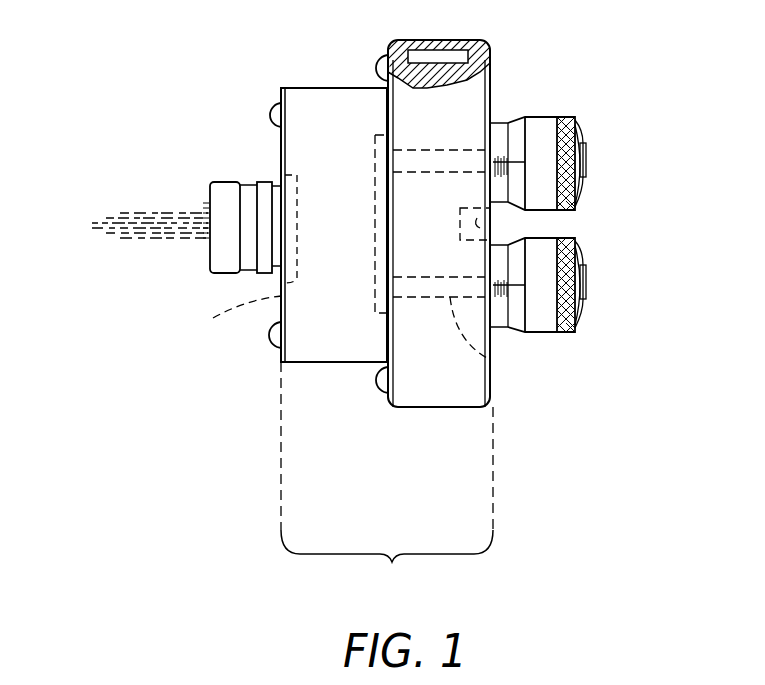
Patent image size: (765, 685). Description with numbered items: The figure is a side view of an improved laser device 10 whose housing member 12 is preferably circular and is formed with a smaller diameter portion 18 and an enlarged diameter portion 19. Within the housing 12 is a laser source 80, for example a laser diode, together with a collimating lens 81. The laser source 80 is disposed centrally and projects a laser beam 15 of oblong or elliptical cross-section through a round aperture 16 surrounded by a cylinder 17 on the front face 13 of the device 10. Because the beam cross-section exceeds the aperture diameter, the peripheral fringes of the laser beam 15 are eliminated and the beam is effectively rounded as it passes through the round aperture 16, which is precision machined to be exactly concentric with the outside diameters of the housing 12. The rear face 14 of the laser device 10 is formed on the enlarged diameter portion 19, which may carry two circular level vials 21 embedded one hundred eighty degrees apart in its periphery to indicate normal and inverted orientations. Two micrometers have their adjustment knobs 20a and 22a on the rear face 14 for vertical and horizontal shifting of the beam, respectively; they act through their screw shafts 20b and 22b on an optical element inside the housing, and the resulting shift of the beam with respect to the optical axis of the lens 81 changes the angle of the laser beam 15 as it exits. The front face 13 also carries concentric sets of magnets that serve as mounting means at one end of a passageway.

The laser device 10 is at (550, 51).
The housing member 12 is at (387, 483).
The front face 13 is at (282, 158).
The rear face 14 is at (492, 90).
The laser beam 15 is at (148, 234).
The round aperture 16 is at (207, 198).
The cylinder 17 is at (233, 183).
The smaller diameter portion 18 is at (315, 352).
The enlarged diameter portion 19 is at (435, 40).
The vertical micrometer adjustment knob 20a is at (542, 115).
The screw shaft 20b is at (433, 150).
The circular level vial 21 is at (452, 55).
The horizontal micrometer adjustment knob 22a is at (540, 333).
The screw shaft 22b is at (490, 364).
The laser source 80 is at (480, 225).
The collimating lens 81 is at (234, 267).